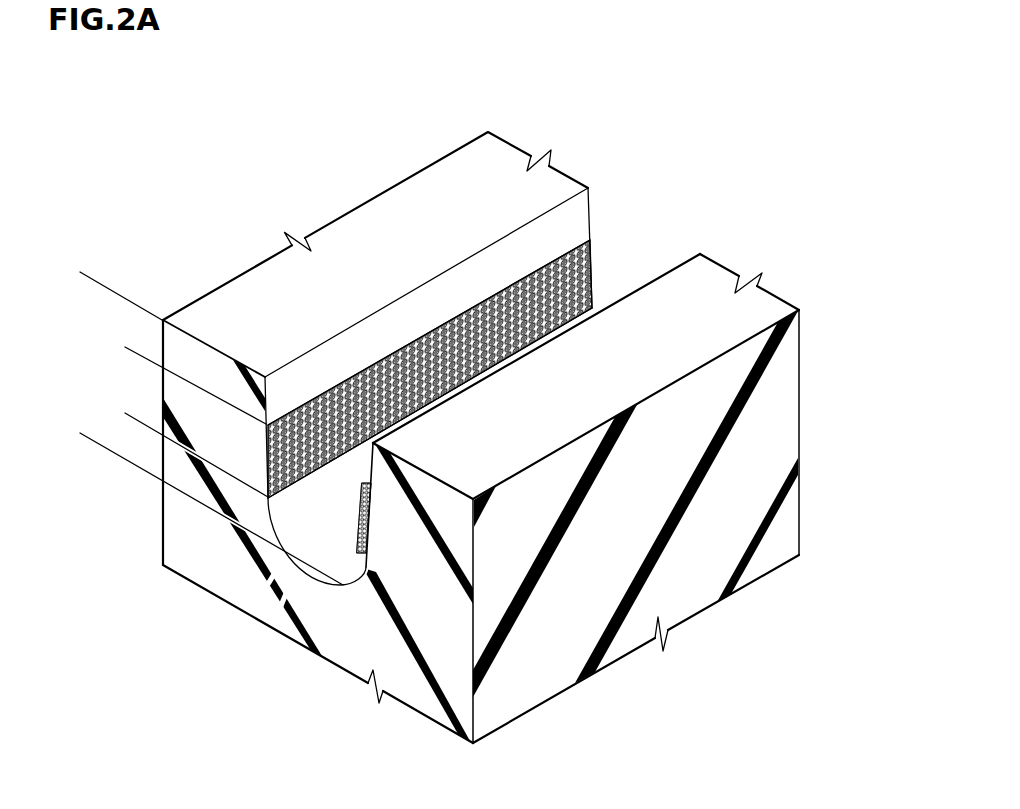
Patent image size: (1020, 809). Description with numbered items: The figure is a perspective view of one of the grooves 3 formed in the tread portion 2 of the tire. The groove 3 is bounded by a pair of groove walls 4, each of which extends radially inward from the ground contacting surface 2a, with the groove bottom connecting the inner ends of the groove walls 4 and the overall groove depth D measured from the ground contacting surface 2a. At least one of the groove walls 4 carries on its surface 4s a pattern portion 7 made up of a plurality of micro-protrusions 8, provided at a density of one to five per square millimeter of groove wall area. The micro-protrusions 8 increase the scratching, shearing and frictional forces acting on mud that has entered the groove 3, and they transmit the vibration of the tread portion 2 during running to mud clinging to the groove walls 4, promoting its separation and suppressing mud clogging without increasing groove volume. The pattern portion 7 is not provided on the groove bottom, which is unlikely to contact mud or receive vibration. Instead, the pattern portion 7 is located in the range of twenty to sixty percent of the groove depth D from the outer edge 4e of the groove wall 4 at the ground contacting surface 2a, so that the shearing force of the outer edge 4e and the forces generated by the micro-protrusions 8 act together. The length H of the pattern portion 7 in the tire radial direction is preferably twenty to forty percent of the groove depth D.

The tread portion 2 is at (805, 255).
The ground contacting surface 2a is at (493, 170).
The groove 3 is at (638, 233).
The groove wall 4 is at (568, 225).
The outer edge 4e is at (391, 302).
The surface 4s is at (298, 483).
The pattern portion 7 is at (490, 287).
The micro-protrusion 8 is at (324, 392).
The groove depth D is at (83, 275).
The length of the pattern portion H is at (129, 347).